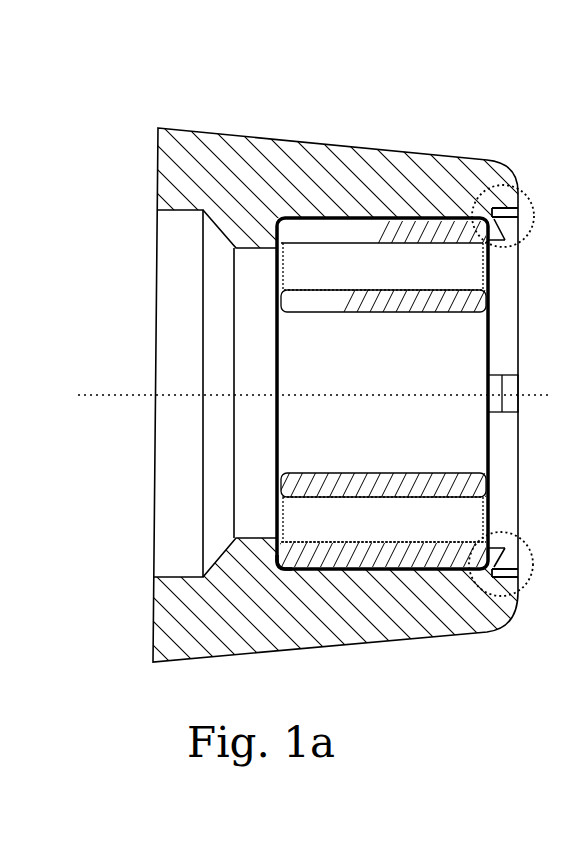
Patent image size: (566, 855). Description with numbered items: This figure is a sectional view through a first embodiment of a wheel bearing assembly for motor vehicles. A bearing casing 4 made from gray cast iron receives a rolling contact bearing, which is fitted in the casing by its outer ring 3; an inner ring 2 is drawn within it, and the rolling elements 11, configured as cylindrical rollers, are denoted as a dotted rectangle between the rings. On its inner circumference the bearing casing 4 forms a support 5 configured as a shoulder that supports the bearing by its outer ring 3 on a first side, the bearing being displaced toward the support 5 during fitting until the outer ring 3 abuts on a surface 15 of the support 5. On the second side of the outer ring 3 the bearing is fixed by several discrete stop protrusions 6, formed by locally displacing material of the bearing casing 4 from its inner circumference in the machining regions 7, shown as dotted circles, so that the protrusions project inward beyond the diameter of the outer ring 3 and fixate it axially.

The inner ring 2 is at (433, 300).
The outer ring 3 is at (385, 228).
The bearing casing 4 is at (355, 627).
The support 5 is at (247, 228).
The stop protrusions 6 is at (511, 233).
The machining regions 7 is at (523, 216).
The rolling elements 11 is at (448, 522).
The surface 15 is at (288, 560).